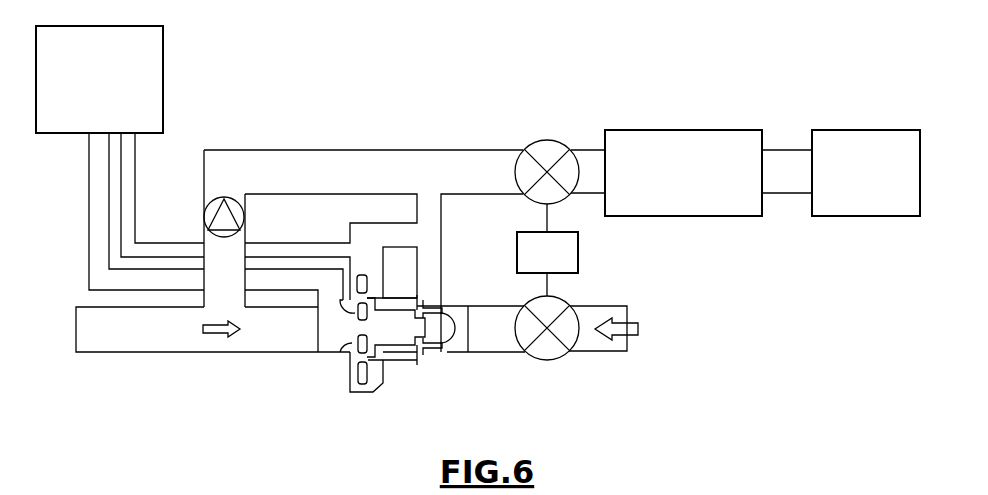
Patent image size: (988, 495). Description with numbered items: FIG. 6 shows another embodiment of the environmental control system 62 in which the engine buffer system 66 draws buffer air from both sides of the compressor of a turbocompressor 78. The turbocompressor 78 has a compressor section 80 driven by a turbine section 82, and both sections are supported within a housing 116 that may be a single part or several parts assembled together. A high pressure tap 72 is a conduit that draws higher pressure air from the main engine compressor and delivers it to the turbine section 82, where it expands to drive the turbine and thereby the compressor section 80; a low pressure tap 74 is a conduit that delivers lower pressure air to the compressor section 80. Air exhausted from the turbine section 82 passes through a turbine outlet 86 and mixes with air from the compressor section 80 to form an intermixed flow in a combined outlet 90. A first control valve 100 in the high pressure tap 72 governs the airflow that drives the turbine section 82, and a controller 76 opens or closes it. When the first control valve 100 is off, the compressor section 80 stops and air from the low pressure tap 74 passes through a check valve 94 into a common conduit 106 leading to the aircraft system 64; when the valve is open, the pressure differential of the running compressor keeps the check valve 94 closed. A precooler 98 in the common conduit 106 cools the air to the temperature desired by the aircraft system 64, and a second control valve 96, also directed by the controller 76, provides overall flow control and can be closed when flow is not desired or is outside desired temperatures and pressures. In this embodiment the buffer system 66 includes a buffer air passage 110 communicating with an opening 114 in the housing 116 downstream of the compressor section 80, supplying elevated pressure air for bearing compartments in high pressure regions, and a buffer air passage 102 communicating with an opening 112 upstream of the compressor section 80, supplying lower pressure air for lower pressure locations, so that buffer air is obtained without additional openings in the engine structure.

The environmental control system 62 is at (301, 110).
The aircraft system 64 is at (867, 130).
The engine buffer system 66 is at (163, 50).
The high pressure tap 72 is at (600, 315).
The low pressure tap 74 is at (172, 335).
The controller 76 is at (547, 250).
The turbocompressor 78 is at (349, 403).
The compressor section 80 is at (334, 345).
The turbine section 82 is at (431, 353).
The turbine outlet 86 is at (369, 250).
The combined outlet 90 is at (430, 210).
The check valve 94 is at (205, 213).
The second control valve 96 is at (548, 140).
The precooler 98 is at (700, 130).
The first control valve 100 is at (556, 304).
The buffer air passage 102 is at (89, 200).
The common conduit 106 is at (321, 172).
The buffer air passage 110 is at (128, 163).
The opening 112 is at (316, 318).
The opening 114 is at (339, 240).
The housing 116 is at (390, 353).